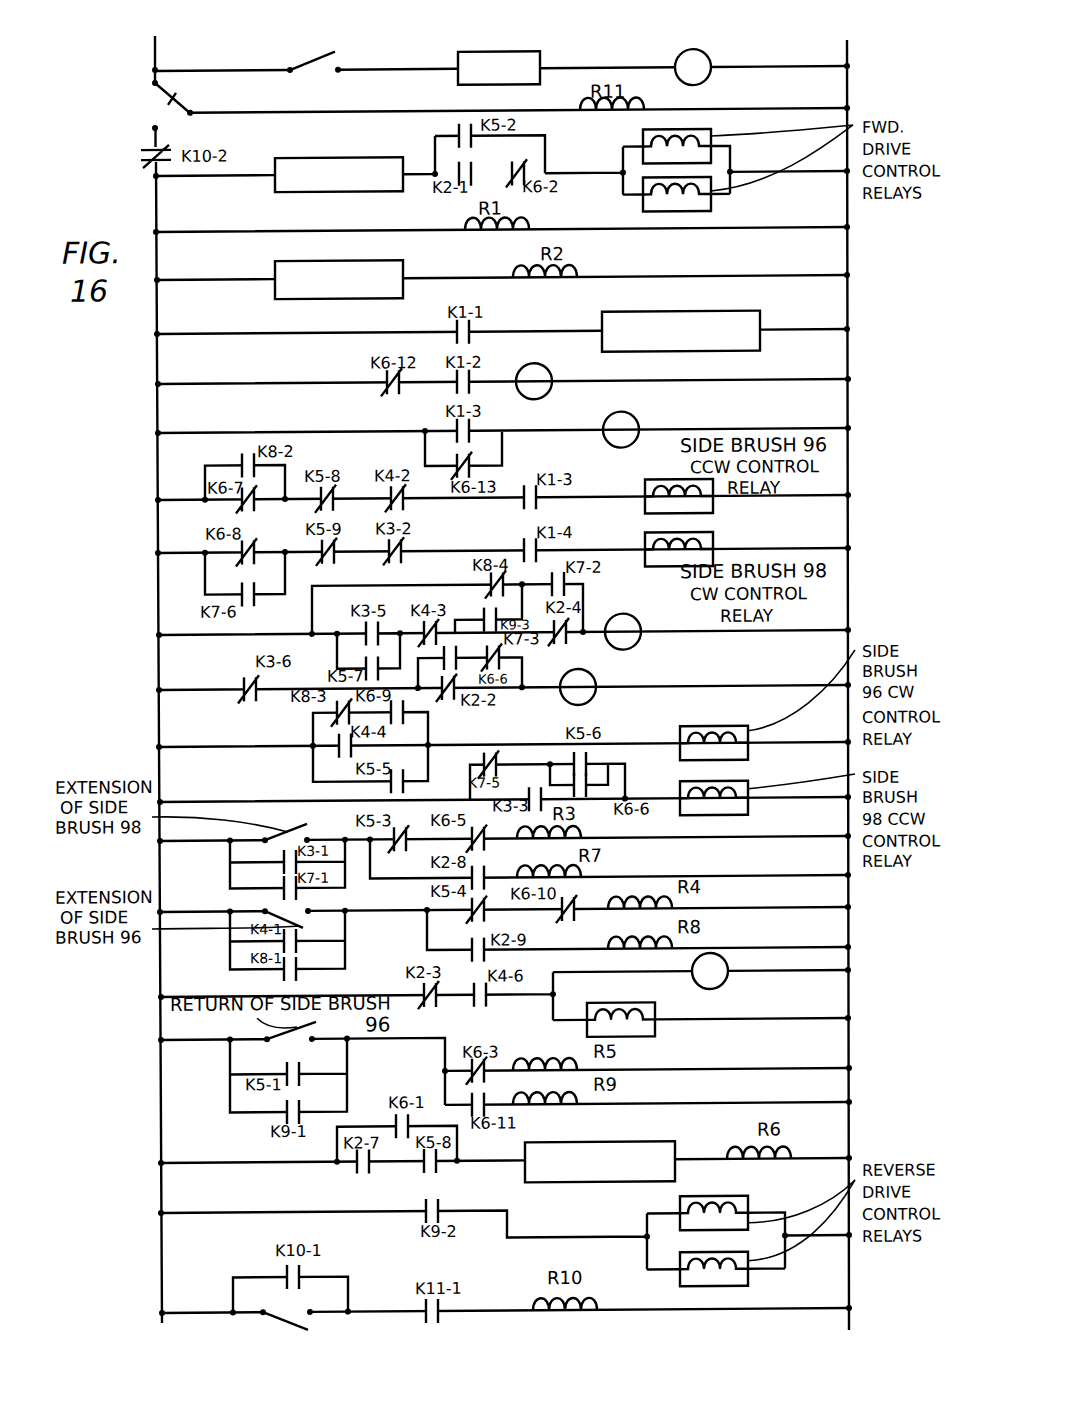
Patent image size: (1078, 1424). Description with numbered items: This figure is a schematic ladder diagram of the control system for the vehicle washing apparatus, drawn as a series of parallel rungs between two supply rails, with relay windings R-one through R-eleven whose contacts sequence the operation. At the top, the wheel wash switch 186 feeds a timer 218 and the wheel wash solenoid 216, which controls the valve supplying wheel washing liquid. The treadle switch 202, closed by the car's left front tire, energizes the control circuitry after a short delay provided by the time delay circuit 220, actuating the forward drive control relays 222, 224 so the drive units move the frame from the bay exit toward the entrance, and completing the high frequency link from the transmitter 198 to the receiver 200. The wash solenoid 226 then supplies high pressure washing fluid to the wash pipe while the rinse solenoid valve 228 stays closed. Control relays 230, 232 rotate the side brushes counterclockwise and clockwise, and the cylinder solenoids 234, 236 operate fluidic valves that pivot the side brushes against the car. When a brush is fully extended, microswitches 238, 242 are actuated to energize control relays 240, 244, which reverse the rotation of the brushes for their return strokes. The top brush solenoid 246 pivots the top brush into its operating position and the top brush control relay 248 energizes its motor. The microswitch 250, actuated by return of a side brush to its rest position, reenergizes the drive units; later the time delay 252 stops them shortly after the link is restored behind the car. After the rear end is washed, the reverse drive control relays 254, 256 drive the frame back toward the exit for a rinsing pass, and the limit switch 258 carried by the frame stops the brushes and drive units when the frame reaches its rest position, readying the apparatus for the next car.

The wheel wash switch 186 is at (301, 51).
The treadle switch 202 is at (184, 97).
The timer 218 is at (505, 49).
The wheel wash solenoid 216 is at (700, 50).
The time delay circuit 220 is at (272, 188).
The forward drive control relay 222 is at (643, 132).
The forward drive control relay 224 is at (643, 204).
The receiver 200 is at (272, 294).
The transmitter 198 is at (724, 310).
The wash solenoid 226 is at (556, 371).
The rinse solenoid valve 228 is at (640, 418).
The side brush 96 counterclockwise control relay 230 is at (680, 478).
The side brush 98 clockwise control relay 232 is at (675, 577).
The cylinder 126 solenoid 234 is at (641, 635).
The cylinder 126' solenoid 236 is at (596, 682).
The side brush 96 clockwise control relay 244 is at (680, 730).
The side brush 98 counterclockwise control relay 240 is at (748, 805).
The microswitch 238 is at (296, 828).
The microswitch 242 is at (290, 914).
The top brush solenoid 246 is at (725, 997).
The top brush control relay 248 is at (675, 1037).
The microswitch 250 is at (298, 1039).
The time delay 252 is at (601, 1180).
The reverse drive control relay 254 is at (748, 1200).
The reverse drive control relay 256 is at (748, 1280).
The limit switch 258 is at (297, 1323).